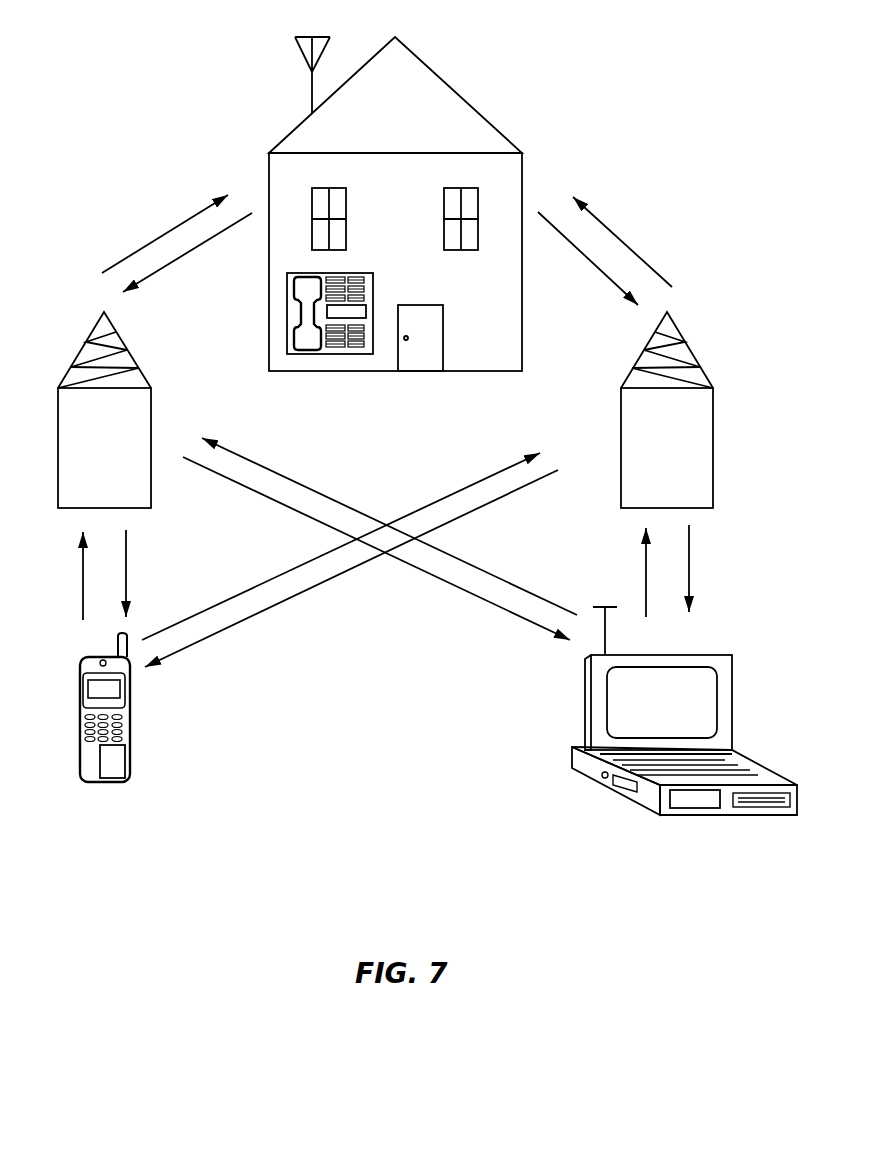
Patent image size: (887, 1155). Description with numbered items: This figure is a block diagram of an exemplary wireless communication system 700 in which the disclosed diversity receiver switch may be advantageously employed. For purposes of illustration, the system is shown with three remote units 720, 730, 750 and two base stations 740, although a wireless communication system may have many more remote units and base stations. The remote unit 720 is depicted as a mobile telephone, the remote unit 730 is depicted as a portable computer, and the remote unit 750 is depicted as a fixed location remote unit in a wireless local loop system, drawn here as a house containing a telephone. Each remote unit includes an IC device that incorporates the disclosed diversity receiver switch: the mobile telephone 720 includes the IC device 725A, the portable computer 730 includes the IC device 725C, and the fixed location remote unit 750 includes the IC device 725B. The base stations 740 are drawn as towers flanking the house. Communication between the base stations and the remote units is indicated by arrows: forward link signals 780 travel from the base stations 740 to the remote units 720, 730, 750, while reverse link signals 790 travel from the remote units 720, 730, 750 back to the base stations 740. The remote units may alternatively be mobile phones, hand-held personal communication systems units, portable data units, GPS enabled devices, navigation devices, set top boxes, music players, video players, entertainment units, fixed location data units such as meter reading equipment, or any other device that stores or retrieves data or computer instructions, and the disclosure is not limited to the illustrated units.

The wireless communication system 700 is at (123, 78).
The remote unit 720 is at (82, 665).
The IC device 725A is at (113, 763).
The IC device 725B is at (355, 313).
The IC device 725C is at (700, 802).
The remote unit 730 is at (710, 655).
The base station 740 is at (82, 350).
The remote unit 750 is at (276, 312).
The forward link signals 780 is at (170, 230).
The reverse link signals 790 is at (172, 263).